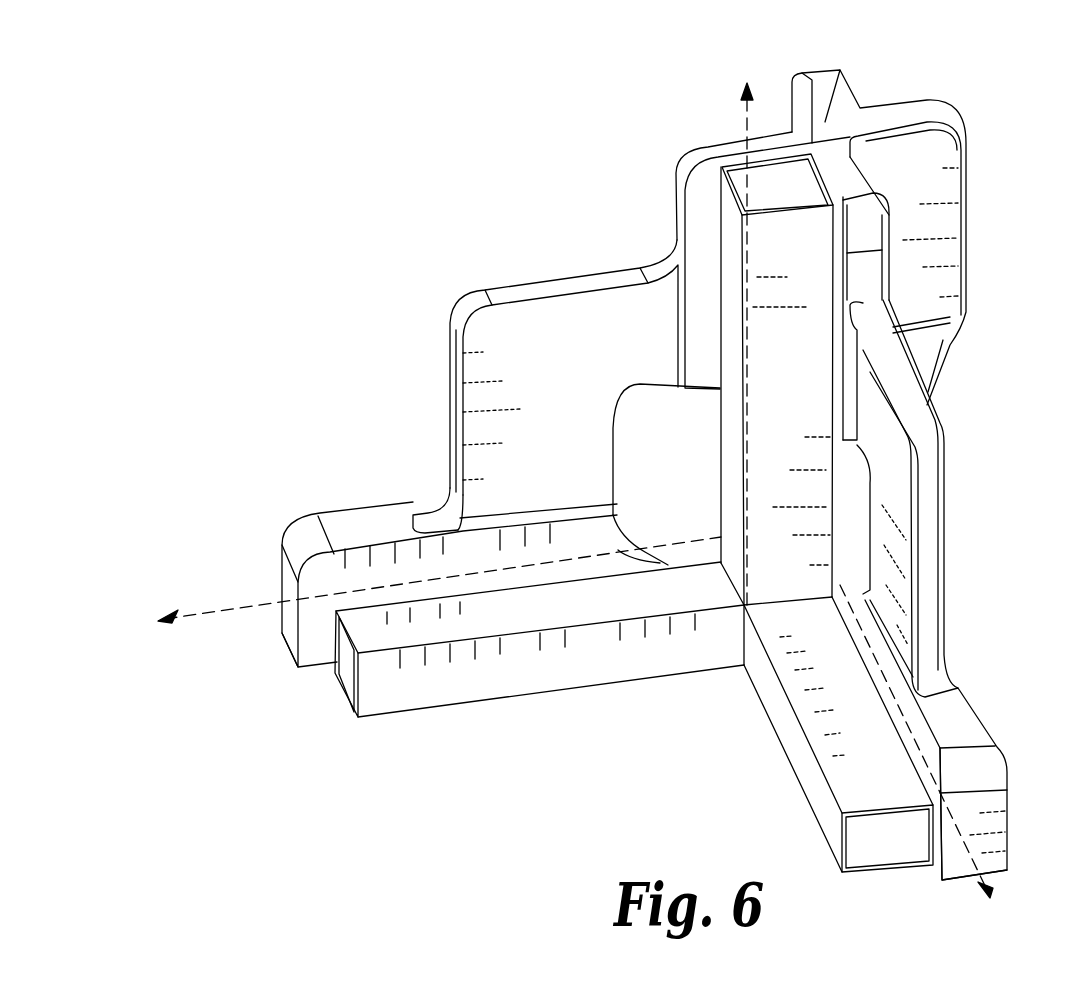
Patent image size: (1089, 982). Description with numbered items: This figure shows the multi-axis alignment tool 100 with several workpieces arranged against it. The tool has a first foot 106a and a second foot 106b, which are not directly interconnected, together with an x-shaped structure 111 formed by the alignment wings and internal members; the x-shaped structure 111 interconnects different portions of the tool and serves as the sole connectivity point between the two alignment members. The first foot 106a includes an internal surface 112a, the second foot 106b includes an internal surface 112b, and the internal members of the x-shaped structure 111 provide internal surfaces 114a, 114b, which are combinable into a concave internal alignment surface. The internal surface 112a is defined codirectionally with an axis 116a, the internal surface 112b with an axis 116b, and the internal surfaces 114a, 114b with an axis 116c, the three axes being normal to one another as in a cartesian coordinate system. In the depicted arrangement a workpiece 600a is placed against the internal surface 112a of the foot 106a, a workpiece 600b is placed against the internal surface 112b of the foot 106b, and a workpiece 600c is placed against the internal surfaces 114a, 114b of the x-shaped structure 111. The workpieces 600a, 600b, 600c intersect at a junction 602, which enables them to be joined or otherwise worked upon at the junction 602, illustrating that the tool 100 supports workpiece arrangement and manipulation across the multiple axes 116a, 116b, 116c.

The multi-axis alignment tool 100 is at (512, 82).
The first foot 106a is at (295, 545).
The second foot 106b is at (955, 735).
The x-shaped structure 111 is at (884, 90).
The internal surface 112a is at (322, 633).
The internal surface 112b is at (940, 853).
The internal surface 114a is at (703, 193).
The internal surface 114b is at (842, 308).
The axis 116a is at (158, 612).
The axis 116b is at (1075, 883).
The axis 116c is at (742, 87).
The workpiece 600a is at (437, 682).
The workpiece 600b is at (803, 758).
The workpiece 600c is at (730, 430).
The junction 602 is at (742, 673).